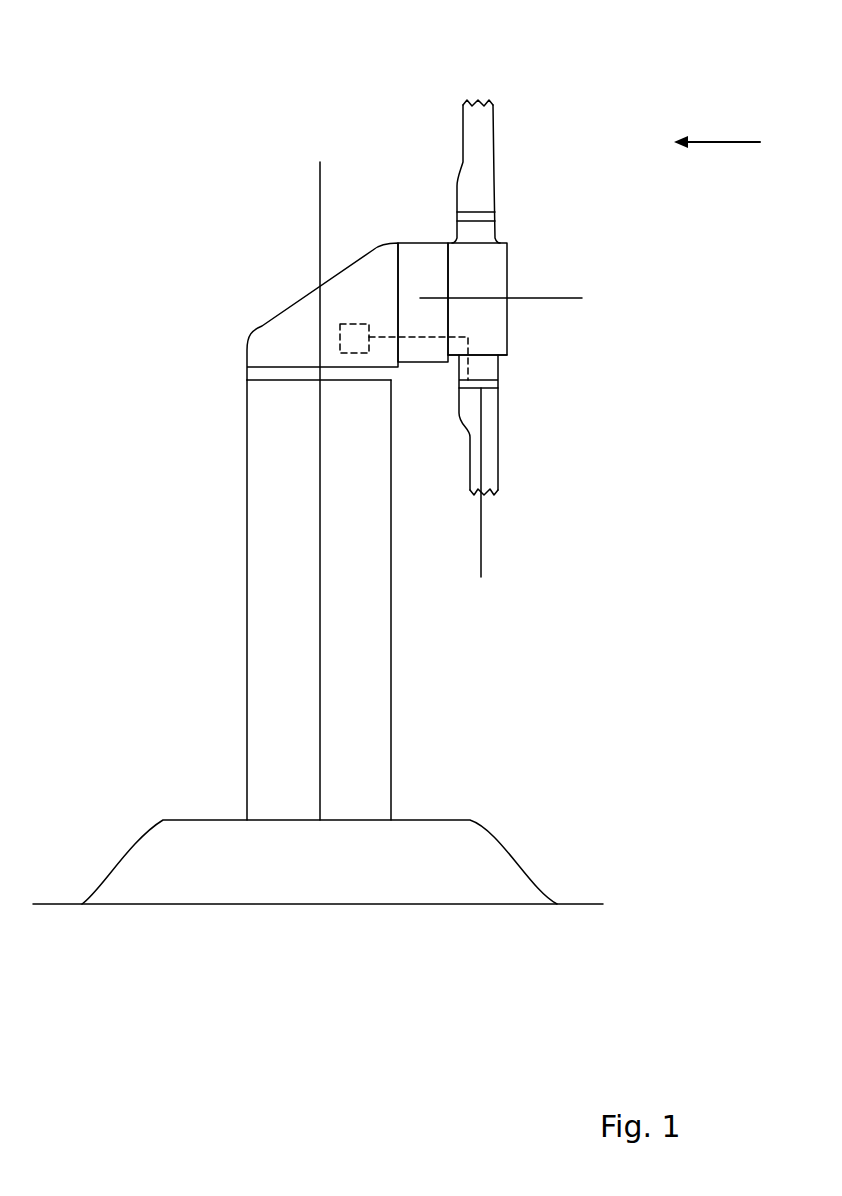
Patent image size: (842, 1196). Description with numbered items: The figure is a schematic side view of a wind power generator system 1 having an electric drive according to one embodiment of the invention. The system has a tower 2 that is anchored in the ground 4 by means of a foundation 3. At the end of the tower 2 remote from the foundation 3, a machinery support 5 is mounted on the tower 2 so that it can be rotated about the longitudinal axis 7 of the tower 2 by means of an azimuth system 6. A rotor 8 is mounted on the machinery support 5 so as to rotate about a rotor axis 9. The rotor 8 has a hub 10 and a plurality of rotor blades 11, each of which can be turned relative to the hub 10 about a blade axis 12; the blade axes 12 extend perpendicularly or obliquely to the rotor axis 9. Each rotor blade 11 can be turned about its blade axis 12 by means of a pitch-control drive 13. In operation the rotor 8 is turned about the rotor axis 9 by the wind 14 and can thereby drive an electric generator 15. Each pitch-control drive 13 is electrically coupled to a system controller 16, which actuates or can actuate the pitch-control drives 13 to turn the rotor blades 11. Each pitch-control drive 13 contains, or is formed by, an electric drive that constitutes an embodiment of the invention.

The wind power generator system 1 is at (119, 215).
The tower 2 is at (265, 623).
The foundation 3 is at (145, 847).
The ground 4 is at (583, 904).
The machinery support 5 is at (268, 343).
The azimuth system 6 is at (258, 375).
The longitudinal axis 7 is at (318, 187).
The rotor 8 is at (514, 255).
The rotor axis 9 is at (555, 297).
The hub 10 is at (500, 332).
The rotor blades 11 is at (483, 133).
The blade axis 12 is at (481, 560).
The pitch-control drive 13 is at (488, 383).
The wind 14 is at (723, 142).
The electric generator 15 is at (428, 252).
The system controller 16 is at (348, 324).